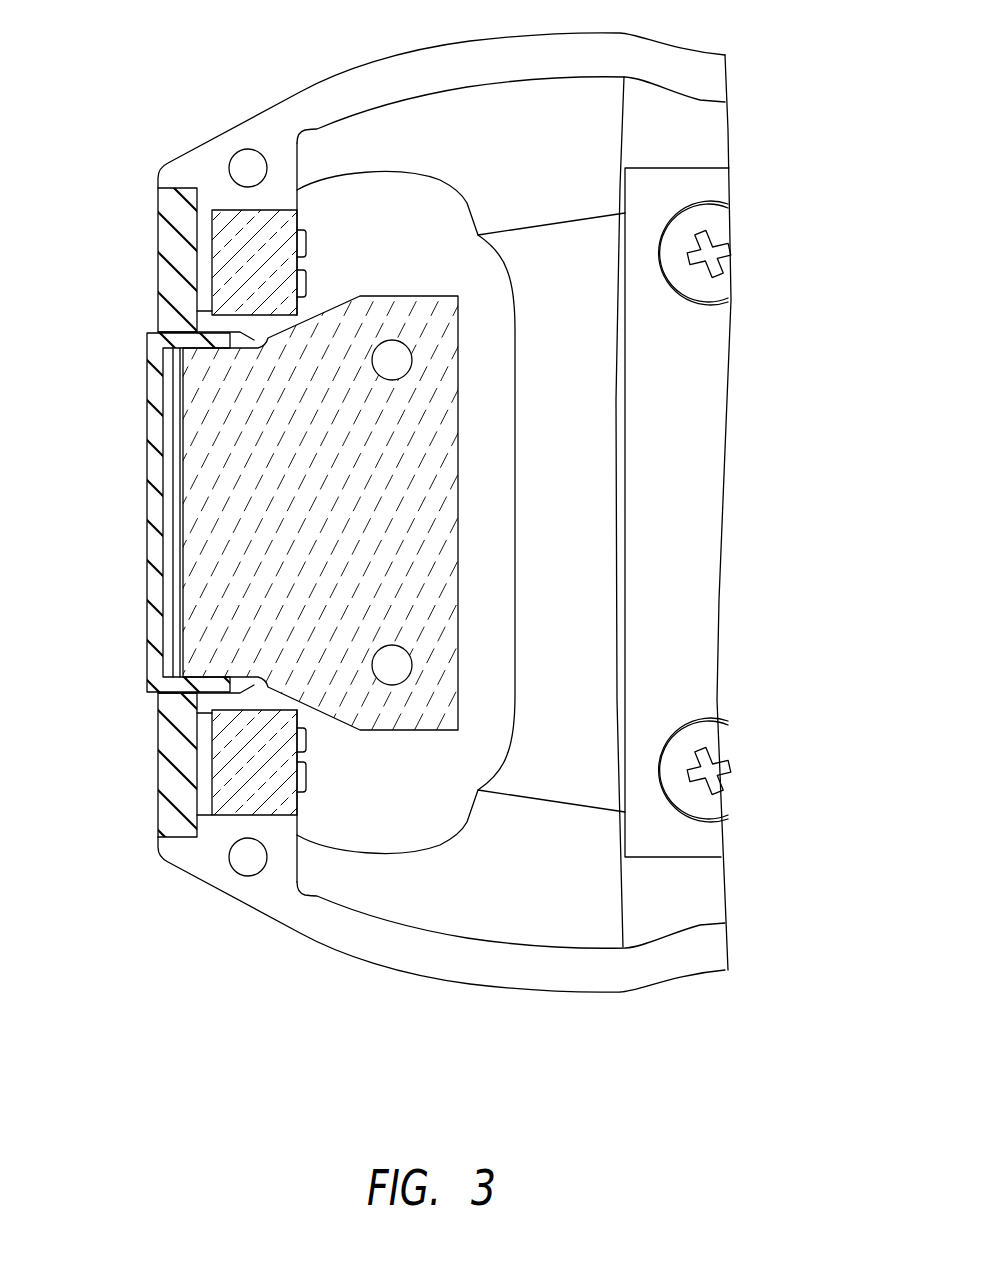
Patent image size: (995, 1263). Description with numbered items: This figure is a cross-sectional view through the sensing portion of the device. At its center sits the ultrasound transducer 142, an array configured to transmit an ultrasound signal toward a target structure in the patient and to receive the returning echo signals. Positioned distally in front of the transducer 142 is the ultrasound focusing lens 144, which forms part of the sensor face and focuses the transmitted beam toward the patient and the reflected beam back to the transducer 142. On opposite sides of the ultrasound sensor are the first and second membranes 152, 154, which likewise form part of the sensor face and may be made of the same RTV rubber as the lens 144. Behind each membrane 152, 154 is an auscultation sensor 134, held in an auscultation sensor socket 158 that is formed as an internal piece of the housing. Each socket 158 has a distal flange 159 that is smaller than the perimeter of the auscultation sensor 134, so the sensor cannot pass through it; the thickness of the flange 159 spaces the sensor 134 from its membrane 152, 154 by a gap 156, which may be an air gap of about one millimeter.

The auscultation sensor 134 is at (270, 250).
The ultrasound transducer 142 is at (403, 513).
The ultrasound focusing lens 144 is at (143, 512).
The first membrane 152 is at (157, 232).
The second membrane 154 is at (155, 780).
The gap 156 is at (202, 214).
The auscultation sensor socket 158 is at (280, 190).
The distal flange 159 is at (213, 812).